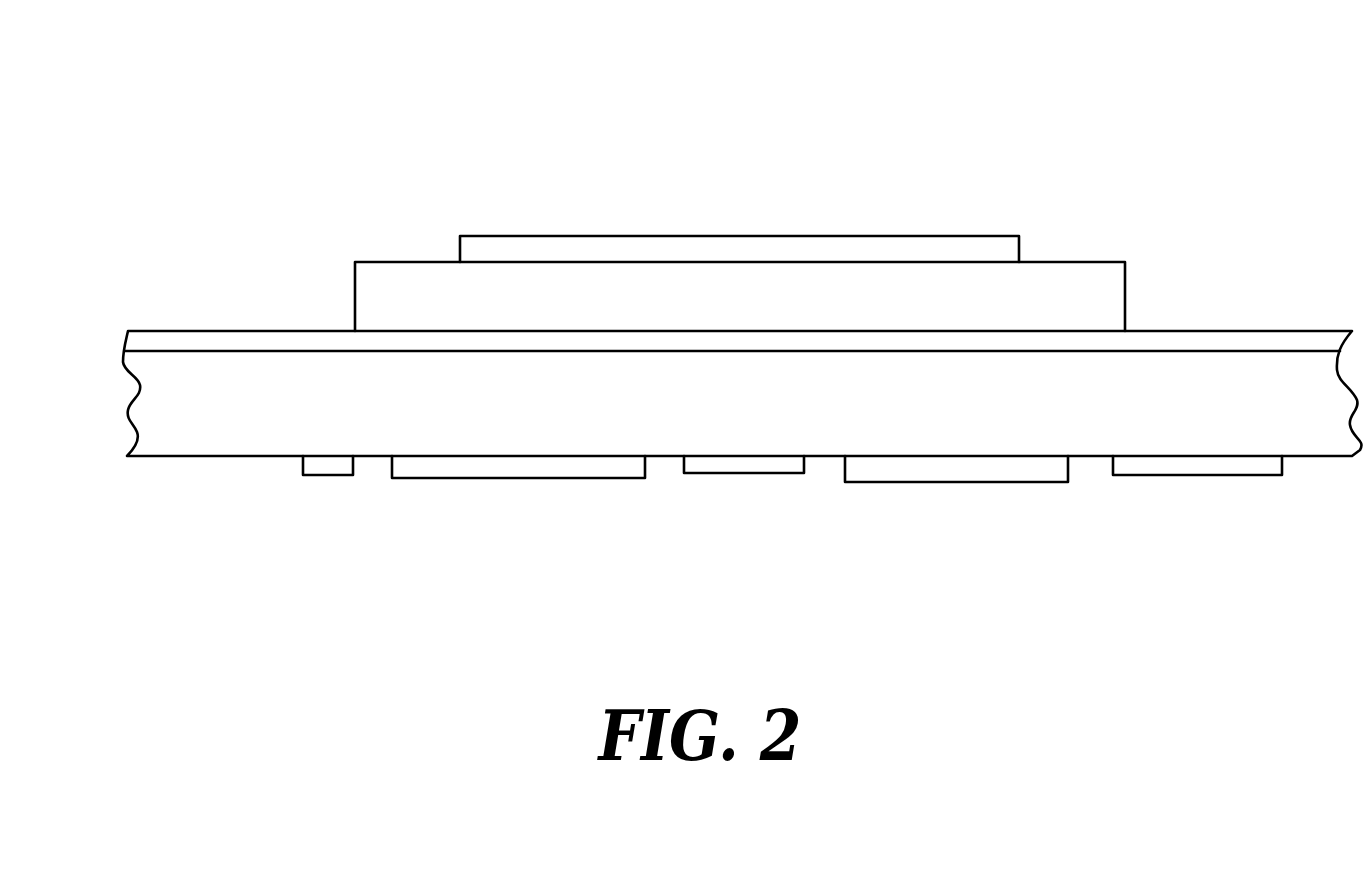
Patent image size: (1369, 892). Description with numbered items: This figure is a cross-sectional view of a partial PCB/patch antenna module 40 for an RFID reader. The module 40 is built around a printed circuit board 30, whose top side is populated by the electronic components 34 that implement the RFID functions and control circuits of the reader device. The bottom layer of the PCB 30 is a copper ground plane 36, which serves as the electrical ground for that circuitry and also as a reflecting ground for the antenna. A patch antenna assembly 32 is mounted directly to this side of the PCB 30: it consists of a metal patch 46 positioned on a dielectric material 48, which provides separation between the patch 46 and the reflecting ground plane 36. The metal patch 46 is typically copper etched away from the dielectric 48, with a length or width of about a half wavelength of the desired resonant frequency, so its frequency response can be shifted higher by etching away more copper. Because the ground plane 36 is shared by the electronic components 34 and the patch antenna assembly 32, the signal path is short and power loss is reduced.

The printed circuit board 30 is at (113, 332).
The patch antenna assembly 32 is at (343, 233).
The electronic components 34 is at (908, 482).
The ground plane 36 is at (1268, 330).
The PCB/patch antenna module 40 is at (713, 100).
The metal patch 46 is at (959, 235).
The dielectric material 48 is at (1085, 261).